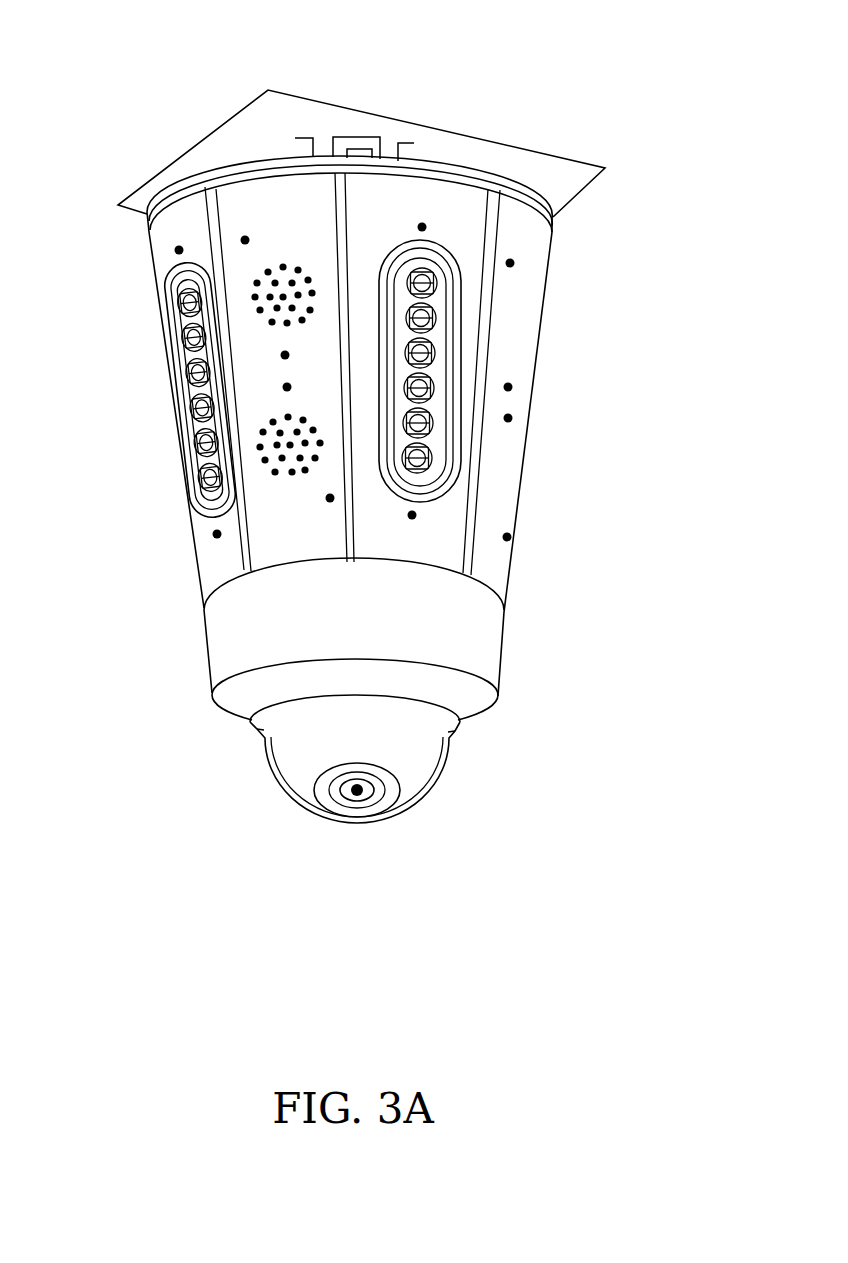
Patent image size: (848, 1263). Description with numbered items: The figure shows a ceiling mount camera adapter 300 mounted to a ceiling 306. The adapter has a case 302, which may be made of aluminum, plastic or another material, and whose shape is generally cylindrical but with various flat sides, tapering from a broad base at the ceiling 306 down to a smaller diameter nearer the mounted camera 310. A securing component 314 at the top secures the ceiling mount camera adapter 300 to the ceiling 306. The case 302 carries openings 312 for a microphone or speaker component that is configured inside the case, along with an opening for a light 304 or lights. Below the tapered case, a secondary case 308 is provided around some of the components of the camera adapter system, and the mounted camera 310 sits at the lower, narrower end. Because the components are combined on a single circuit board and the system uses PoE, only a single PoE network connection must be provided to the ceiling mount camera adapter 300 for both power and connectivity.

The ceiling mount camera adapter 300 is at (81, 108).
The case 302 is at (527, 465).
The light 304 is at (457, 367).
The ceiling 306 is at (665, 200).
The secondary case 308 is at (503, 673).
The mounted camera 310 is at (443, 778).
The openings 312 is at (306, 477).
The securing component 314 is at (388, 150).